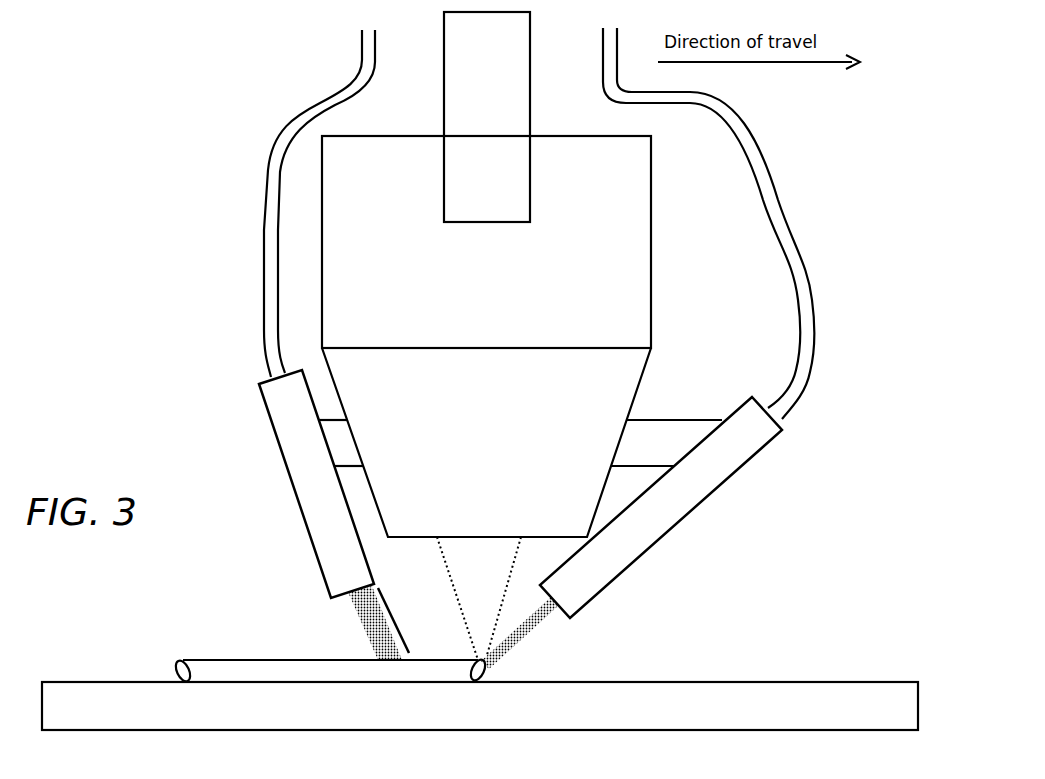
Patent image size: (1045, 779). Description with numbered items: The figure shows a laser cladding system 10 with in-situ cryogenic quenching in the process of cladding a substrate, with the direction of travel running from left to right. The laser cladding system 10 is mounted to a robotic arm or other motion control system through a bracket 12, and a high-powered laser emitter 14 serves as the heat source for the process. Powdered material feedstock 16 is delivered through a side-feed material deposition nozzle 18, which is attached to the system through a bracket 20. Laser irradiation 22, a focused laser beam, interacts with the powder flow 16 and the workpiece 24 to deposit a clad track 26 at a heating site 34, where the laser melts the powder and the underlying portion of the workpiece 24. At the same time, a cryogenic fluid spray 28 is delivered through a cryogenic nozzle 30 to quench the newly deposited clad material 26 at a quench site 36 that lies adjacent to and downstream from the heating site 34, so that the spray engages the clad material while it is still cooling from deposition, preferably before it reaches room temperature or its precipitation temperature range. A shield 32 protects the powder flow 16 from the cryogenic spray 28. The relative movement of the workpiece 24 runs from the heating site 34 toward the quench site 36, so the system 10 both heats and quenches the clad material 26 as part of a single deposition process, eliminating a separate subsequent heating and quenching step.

The laser cladding system 10 is at (184, 181).
The bracket 12 is at (453, 72).
The high-powered laser emitter 14 is at (362, 146).
The powdered material feedstock 16 is at (543, 627).
The material deposition nozzle 18 is at (713, 462).
The bracket 20 is at (657, 436).
The laser irradiation 22 is at (462, 584).
The workpiece 24 is at (742, 688).
The clad track 26 is at (238, 663).
The cryogenic fluid spray 28 is at (357, 614).
The cryogenic nozzle 30 is at (287, 427).
The shield 32 is at (393, 607).
The heating site 34 is at (488, 680).
The quench site 36 is at (387, 657).